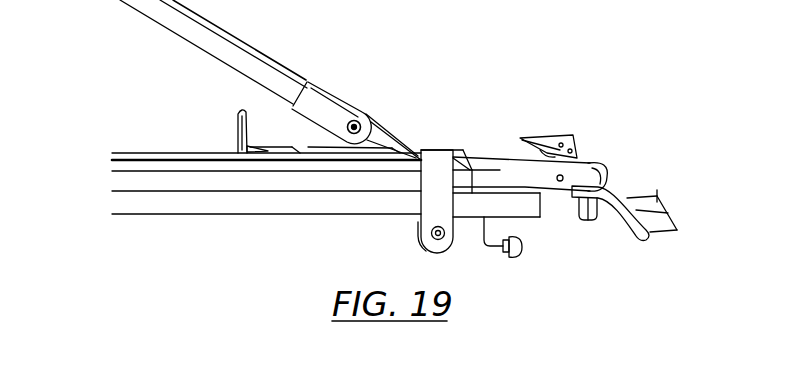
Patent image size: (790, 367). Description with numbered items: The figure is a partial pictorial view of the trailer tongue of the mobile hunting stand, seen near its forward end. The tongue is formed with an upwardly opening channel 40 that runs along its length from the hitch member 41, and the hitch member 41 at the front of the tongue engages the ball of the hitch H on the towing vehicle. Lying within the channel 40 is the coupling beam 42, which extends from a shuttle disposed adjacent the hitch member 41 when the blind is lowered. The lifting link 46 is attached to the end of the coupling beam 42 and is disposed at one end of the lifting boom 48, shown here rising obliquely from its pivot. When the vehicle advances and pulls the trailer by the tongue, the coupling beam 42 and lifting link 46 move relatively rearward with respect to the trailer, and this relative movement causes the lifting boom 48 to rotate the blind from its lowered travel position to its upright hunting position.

The channel 40 is at (292, 182).
The hitch member 41 is at (500, 163).
The coupling beam 42 is at (172, 162).
The lifting link 46 is at (338, 98).
The lifting boom 48 is at (267, 57).
The hitch H is at (637, 195).